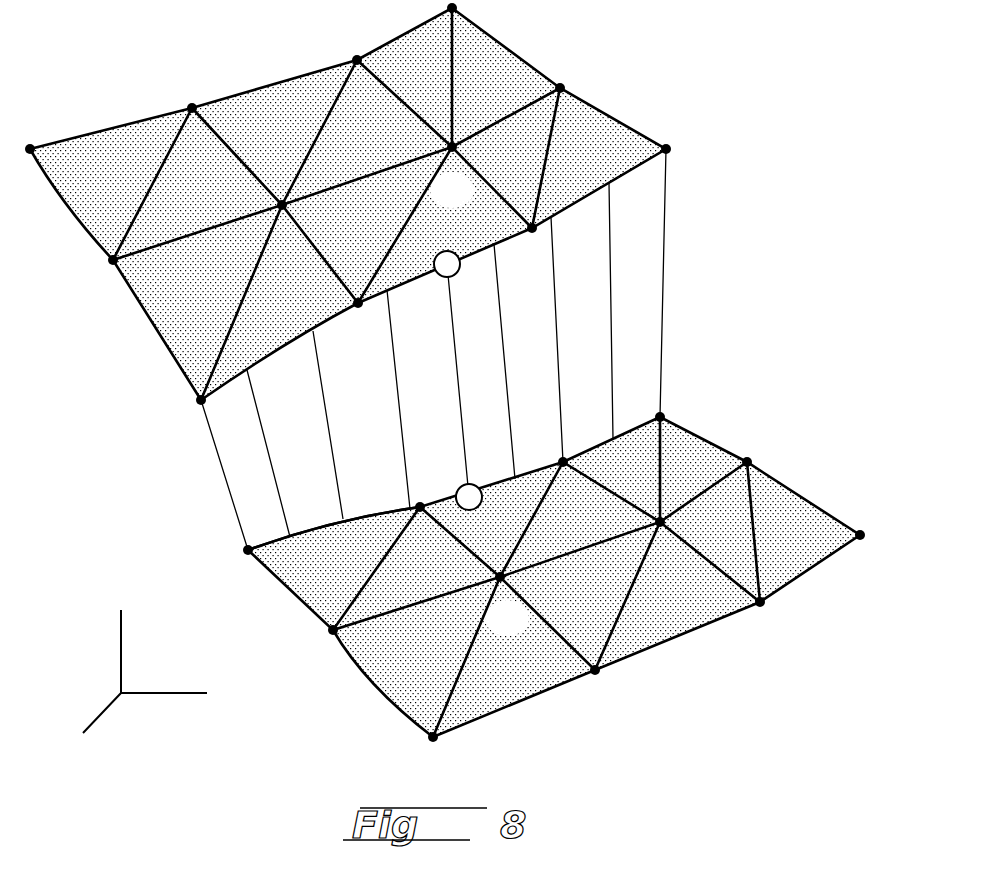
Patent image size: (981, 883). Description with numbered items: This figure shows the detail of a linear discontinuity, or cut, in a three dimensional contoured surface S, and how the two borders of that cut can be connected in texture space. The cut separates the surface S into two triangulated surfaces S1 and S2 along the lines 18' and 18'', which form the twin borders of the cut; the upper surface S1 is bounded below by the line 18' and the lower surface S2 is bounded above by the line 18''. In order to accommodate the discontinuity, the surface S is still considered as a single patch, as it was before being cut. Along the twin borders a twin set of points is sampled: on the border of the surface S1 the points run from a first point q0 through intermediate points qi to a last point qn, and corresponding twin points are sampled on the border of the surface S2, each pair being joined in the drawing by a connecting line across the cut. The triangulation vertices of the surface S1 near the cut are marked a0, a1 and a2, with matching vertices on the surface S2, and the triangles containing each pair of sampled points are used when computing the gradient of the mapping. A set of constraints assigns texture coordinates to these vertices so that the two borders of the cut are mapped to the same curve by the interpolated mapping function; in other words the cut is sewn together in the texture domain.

The first surface S1 is at (152, 328).
The second surface S2 is at (378, 700).
The surface S is at (190, 477).
The cut line 18' is at (259, 385).
The cut line 18'' is at (298, 520).
The first sampled border point q0 is at (185, 413).
The last sampled border point qn is at (681, 152).
The sampled border point qi is at (452, 275).
The vertex alpha 0 of first surface a0 is at (358, 319).
The vertex alpha 1 of first surface a1 is at (527, 245).
The vertex alpha 2 of first surface a2 is at (456, 171).